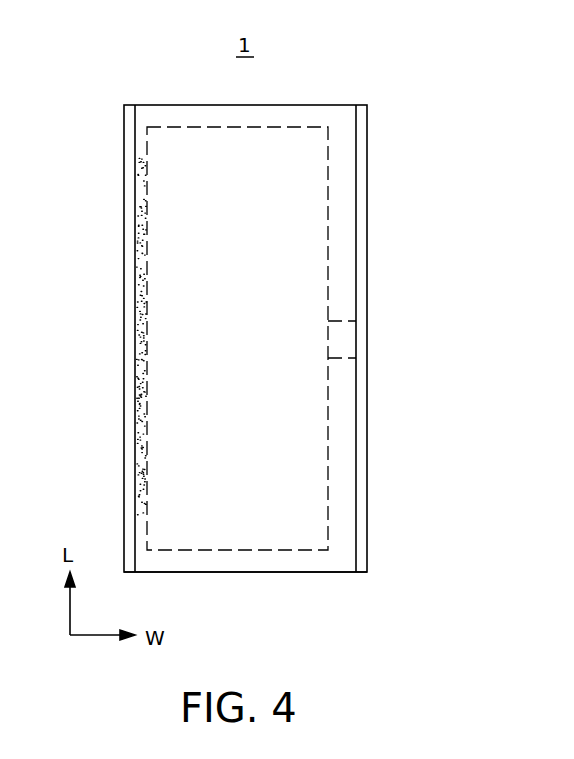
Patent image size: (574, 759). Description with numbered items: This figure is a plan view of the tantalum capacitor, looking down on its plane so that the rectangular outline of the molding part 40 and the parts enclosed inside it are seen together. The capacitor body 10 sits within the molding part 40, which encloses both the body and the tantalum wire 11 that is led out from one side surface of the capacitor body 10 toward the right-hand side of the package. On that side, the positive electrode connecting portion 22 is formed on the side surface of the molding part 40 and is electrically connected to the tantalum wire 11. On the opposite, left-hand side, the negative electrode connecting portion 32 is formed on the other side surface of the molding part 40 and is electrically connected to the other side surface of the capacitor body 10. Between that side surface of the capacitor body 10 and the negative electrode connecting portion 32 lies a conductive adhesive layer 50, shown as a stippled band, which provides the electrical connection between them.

The capacitor body 10 is at (248, 492).
The tantalum wire 11 is at (342, 342).
The positive electrode connecting portion 22 is at (363, 227).
The negative electrode connecting portion 32 is at (130, 227).
The molding part 40 is at (342, 452).
The conductive adhesive layer 50 is at (140, 372).